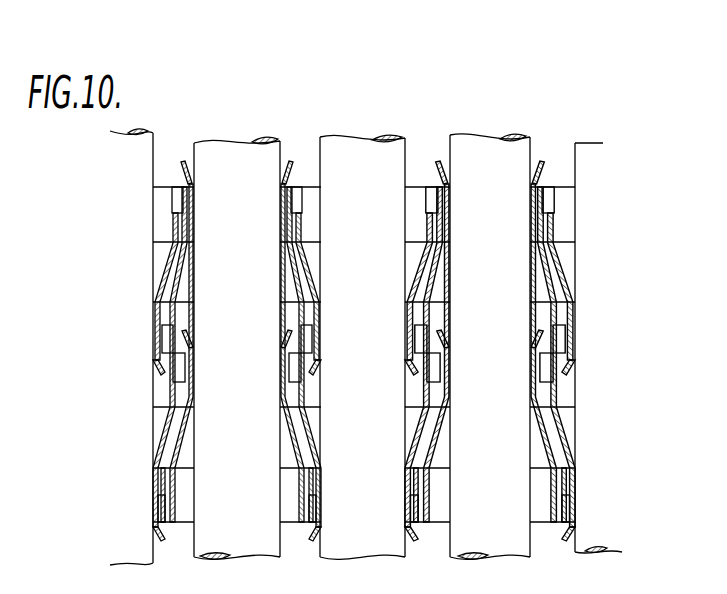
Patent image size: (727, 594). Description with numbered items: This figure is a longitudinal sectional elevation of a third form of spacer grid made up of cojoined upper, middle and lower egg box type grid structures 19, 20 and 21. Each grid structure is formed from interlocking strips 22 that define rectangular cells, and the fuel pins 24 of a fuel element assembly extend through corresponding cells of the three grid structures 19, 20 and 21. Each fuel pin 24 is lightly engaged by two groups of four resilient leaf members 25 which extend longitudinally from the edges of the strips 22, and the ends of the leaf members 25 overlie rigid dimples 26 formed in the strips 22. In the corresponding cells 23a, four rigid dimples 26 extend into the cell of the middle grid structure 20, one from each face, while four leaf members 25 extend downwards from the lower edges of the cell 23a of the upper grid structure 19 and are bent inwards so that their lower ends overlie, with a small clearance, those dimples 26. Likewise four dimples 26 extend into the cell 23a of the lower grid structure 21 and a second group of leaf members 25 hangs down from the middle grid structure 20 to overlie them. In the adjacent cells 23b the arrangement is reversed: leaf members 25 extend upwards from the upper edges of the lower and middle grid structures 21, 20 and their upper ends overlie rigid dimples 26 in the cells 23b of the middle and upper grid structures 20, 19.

The upper grid structure 19 is at (563, 205).
The middle grid structure 20 is at (565, 380).
The lower grid structure 21 is at (532, 507).
The strips 22 is at (567, 192).
The cells 23a is at (308, 198).
The cells 23b is at (548, 225).
The fuel pins 24 is at (353, 167).
The resilient leaf members 25 is at (162, 438).
The rigid dimples 26 is at (430, 198).